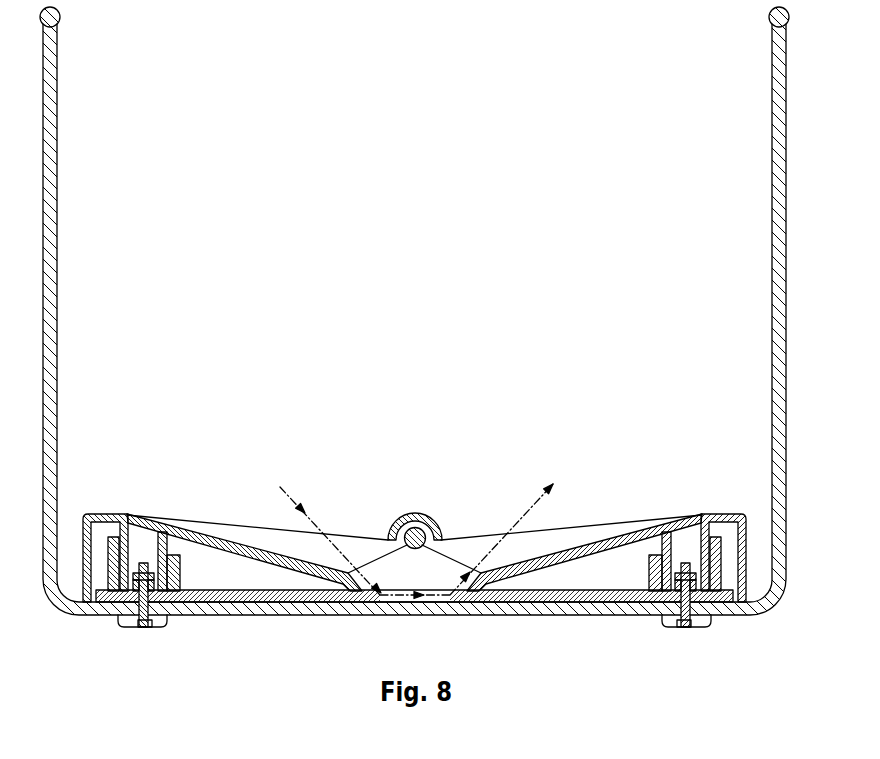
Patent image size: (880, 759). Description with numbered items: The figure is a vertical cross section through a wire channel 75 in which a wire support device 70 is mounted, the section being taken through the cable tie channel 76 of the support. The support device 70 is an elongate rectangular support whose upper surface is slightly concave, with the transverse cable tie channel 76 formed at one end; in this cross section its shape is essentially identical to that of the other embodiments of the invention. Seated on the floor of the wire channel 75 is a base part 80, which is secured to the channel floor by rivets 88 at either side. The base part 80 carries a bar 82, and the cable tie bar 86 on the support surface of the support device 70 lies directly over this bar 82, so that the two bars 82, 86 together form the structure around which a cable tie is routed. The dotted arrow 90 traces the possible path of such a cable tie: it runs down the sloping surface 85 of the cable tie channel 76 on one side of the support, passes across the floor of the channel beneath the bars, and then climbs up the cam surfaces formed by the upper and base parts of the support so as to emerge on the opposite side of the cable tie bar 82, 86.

The support device 70 is at (97, 515).
The wire channel 75 is at (775, 266).
The cable tie channel 76 is at (353, 548).
The base part 80 is at (200, 591).
The bar 82 is at (415, 549).
The sloping surface 85 is at (245, 548).
The cable tie bar 86 is at (417, 513).
The rivets 88 is at (133, 627).
The dotted arrow 90 is at (280, 487).